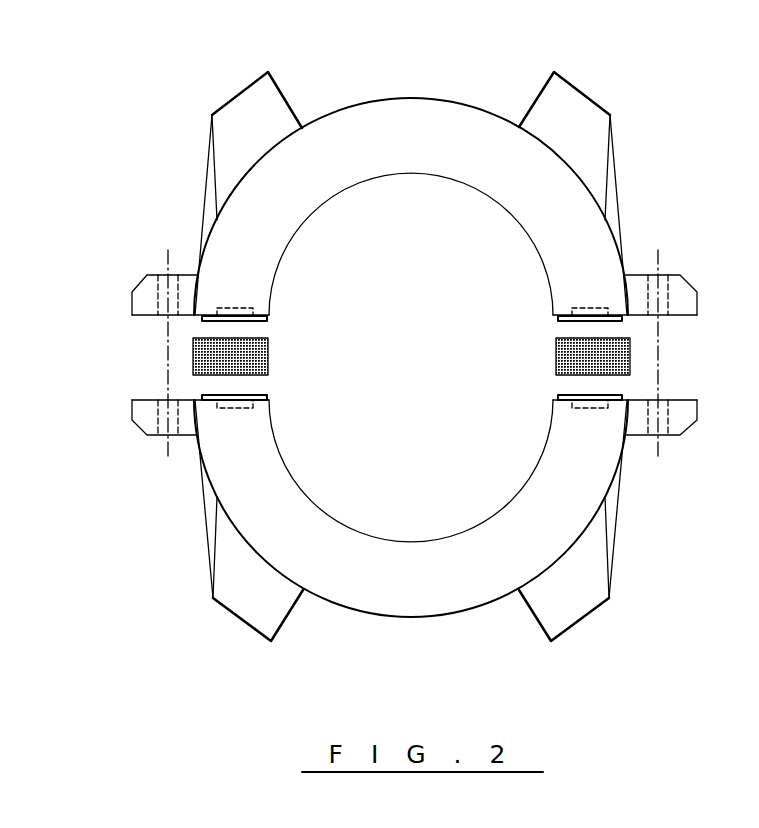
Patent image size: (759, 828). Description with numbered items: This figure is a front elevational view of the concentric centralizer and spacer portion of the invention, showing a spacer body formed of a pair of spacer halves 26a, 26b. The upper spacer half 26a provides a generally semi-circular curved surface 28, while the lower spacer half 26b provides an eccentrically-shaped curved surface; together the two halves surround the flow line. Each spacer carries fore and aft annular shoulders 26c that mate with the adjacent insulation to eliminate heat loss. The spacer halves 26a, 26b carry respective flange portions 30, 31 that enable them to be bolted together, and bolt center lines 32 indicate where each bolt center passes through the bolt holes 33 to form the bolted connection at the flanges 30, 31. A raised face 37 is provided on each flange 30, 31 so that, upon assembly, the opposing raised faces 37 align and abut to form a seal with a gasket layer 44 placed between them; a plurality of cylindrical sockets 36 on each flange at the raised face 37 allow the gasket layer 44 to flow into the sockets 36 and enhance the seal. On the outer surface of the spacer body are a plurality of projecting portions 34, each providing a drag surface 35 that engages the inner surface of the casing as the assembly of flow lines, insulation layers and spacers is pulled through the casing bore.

The spacer half 26a is at (393, 99).
The spacer half 26b is at (423, 617).
The annular shoulder 26c is at (390, 153).
The semi-circular curved surface 28 is at (413, 173).
The flange portion 30 is at (138, 300).
The flange portion 31 is at (140, 417).
The bolt center line 32 is at (170, 258).
The bolt hole 33 is at (157, 298).
The projecting portion 34 is at (283, 96).
The drag surface 35 is at (248, 86).
The cylindrical socket 36 is at (237, 305).
The raised face 37 is at (258, 322).
The gasket layer 44 is at (270, 356).